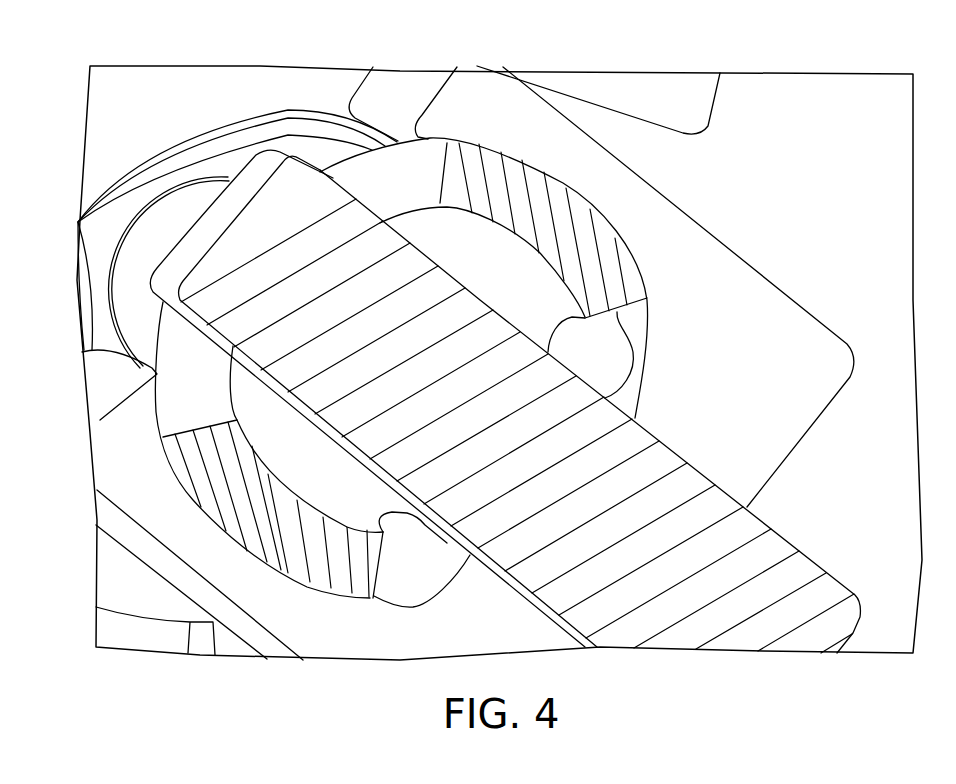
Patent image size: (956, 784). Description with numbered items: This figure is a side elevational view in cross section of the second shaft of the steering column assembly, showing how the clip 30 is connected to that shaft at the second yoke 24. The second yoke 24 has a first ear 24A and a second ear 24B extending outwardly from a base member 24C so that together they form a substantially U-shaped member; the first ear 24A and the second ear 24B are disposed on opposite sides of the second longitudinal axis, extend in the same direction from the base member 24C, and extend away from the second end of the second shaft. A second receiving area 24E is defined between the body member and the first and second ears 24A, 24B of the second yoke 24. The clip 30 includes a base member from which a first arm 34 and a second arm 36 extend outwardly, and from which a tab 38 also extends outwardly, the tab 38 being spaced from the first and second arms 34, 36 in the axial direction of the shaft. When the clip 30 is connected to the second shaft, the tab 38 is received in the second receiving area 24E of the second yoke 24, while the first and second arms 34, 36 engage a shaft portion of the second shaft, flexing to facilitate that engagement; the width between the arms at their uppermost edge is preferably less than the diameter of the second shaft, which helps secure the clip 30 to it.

The second yoke 24 is at (431, 128).
The first ear 24A is at (100, 427).
The second ear 24B is at (593, 270).
The base member 24C is at (200, 370).
The second receiving area 24E is at (497, 260).
The clip 30 is at (787, 279).
The first arm 34 is at (513, 108).
The second arm 36 is at (163, 522).
The tab 38 is at (190, 247).